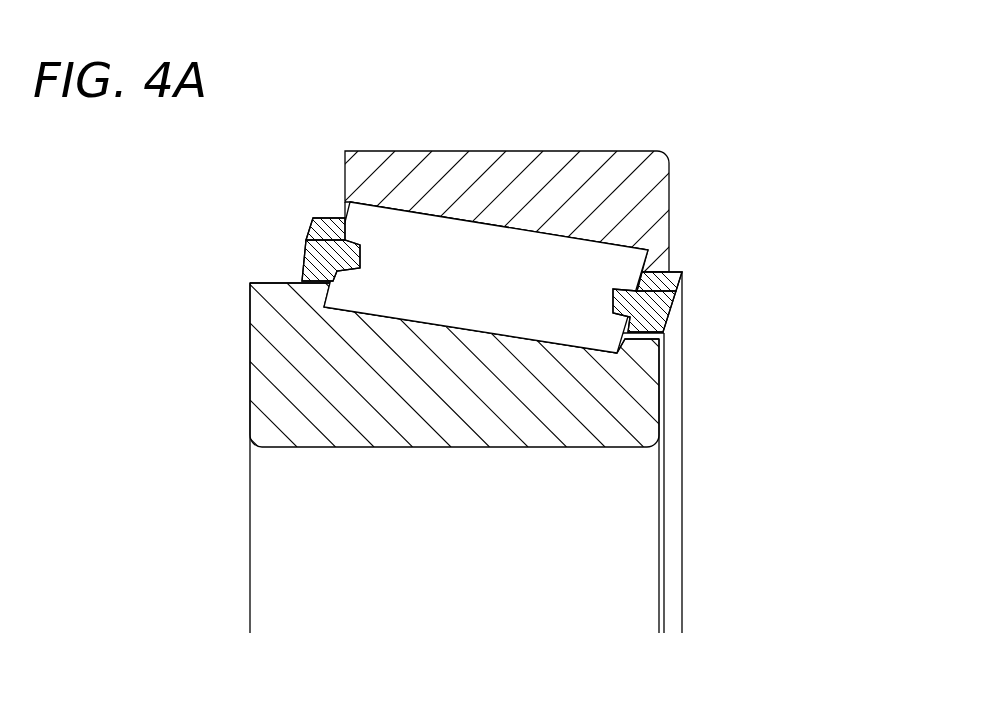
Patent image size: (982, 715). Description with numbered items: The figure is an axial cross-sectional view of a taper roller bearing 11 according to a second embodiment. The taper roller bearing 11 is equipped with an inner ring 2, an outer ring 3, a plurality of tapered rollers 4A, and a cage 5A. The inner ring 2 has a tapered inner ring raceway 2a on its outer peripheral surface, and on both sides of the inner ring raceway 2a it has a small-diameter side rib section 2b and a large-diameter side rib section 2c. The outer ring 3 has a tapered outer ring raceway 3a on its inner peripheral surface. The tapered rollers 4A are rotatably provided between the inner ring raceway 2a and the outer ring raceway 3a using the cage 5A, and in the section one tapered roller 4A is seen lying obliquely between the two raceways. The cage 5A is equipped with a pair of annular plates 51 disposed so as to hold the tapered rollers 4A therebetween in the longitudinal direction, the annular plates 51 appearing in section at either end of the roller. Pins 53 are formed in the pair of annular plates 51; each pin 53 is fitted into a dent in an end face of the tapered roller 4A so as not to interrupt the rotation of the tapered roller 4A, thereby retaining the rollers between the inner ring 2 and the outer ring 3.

The taper roller bearing 11 is at (446, 322).
The inner ring 2 is at (461, 430).
The inner ring raceway 2a is at (534, 342).
The small-diameter side rib section 2b is at (627, 417).
The large-diameter side rib section 2c is at (280, 328).
The outer ring 3 is at (527, 157).
The outer ring raceway 3a is at (567, 235).
The tapered roller 4A is at (398, 290).
The cage 5A is at (680, 271).
The annular plate 51 is at (317, 230).
The pin 53 is at (302, 268).